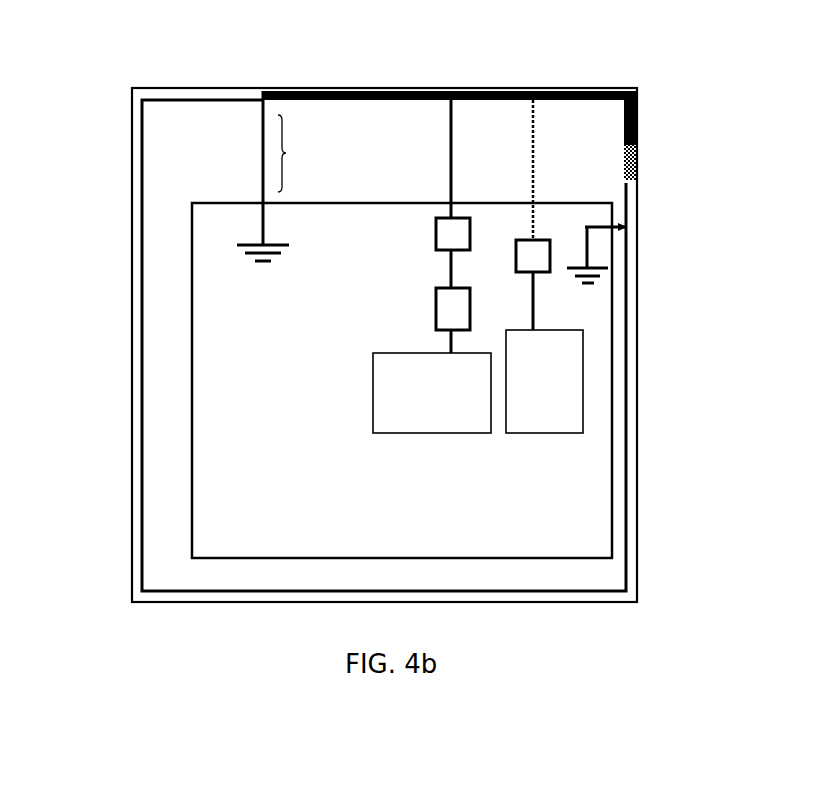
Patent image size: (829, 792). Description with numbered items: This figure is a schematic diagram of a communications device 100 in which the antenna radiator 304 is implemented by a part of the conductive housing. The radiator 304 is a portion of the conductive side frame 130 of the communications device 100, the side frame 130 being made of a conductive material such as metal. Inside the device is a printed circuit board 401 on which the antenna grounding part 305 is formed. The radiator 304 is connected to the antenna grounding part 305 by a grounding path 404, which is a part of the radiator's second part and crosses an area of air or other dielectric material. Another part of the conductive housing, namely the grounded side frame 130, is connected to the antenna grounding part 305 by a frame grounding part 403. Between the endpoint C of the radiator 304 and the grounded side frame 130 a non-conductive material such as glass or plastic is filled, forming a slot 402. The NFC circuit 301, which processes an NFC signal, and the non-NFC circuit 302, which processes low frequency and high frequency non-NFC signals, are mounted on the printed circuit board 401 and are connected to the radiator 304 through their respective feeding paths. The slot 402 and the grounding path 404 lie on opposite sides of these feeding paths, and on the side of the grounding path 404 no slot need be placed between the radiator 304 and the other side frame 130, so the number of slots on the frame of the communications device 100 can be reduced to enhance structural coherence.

The communications device 100 is at (105, 238).
The side frame 130 is at (638, 325).
The radiator 304 is at (483, 90).
The slot 402 is at (640, 175).
The endpoint of the radiator C is at (640, 147).
The frame grounding part 403 is at (628, 226).
The antenna grounding part 305 is at (263, 203).
The grounding path 404 is at (308, 153).
The printed circuit board 401 is at (402, 380).
The non-NFC circuit 302 is at (432, 266).
The NFC circuit 301 is at (544, 266).